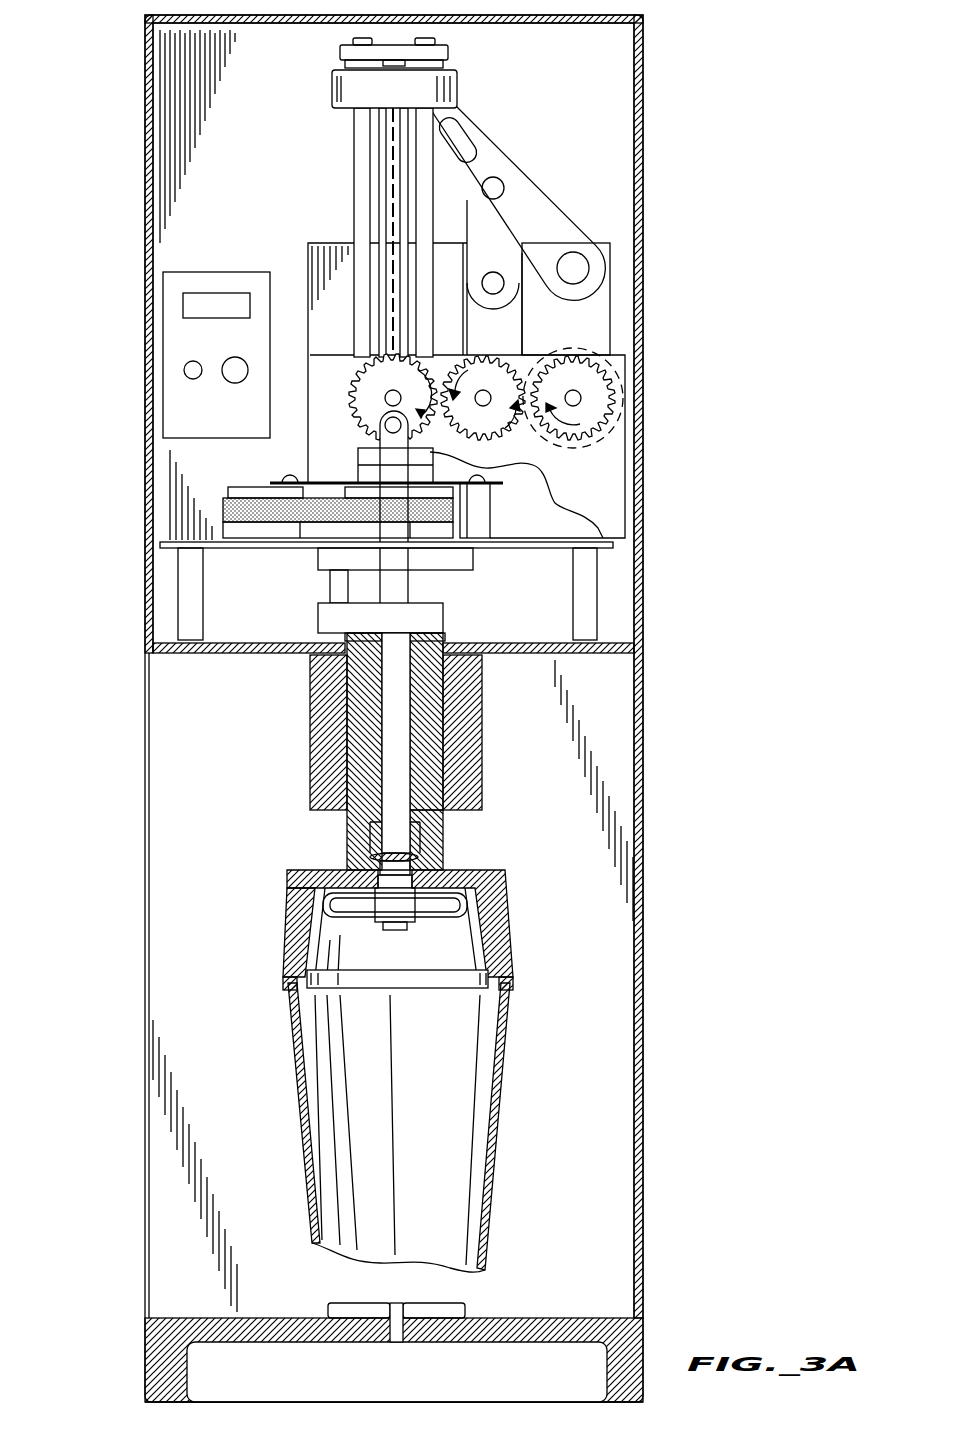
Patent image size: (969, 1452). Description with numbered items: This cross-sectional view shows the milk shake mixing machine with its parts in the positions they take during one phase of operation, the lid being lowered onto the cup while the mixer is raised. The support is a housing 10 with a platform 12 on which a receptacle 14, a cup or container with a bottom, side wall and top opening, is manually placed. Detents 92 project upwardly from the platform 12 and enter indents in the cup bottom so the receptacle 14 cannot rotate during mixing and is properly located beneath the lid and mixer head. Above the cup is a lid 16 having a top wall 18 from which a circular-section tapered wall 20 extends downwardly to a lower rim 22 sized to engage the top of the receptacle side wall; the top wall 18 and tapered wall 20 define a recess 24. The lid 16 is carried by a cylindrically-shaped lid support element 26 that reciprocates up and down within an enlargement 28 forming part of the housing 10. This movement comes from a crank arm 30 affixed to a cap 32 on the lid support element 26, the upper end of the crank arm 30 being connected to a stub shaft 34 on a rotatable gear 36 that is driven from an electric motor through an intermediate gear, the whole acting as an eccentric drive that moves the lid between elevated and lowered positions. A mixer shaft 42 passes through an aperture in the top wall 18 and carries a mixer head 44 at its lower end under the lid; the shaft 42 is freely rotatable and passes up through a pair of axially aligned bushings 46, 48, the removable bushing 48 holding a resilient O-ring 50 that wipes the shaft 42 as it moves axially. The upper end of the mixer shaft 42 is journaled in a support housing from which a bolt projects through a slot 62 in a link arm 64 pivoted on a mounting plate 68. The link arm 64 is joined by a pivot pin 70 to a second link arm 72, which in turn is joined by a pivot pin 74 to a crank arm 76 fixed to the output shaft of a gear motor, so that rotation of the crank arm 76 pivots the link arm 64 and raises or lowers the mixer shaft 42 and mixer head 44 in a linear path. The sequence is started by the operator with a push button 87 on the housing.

The housing 10 is at (95, 705).
The platform 12 is at (600, 1318).
The receptacle 14 is at (490, 1140).
The lid 16 is at (460, 947).
The top wall 18 is at (493, 870).
The tapered wall 20 is at (287, 903).
The lower rim 22 is at (507, 985).
The recess 24 is at (507, 907).
The lid support element 26 is at (347, 822).
The enlargement 28 is at (472, 777).
The crank arm 30 is at (386, 452).
The cap 32 is at (440, 618).
The stub shaft 34 is at (383, 424).
The gear 36 is at (355, 390).
The mixer shaft 42 is at (388, 717).
The mixer head 44 is at (368, 918).
The bushing 46 is at (470, 722).
The bushing 48 is at (423, 835).
The O-ring 50 is at (370, 857).
The slot 62 is at (447, 157).
The link arm 64 is at (513, 195).
The mounting plate 68 is at (308, 282).
The pivot pin 70 is at (500, 183).
The second link arm 72 is at (500, 290).
The pivot pin 74 is at (508, 272).
The crank arm 76 is at (508, 330).
The push button 87 is at (236, 376).
The detents 92 is at (323, 1313).